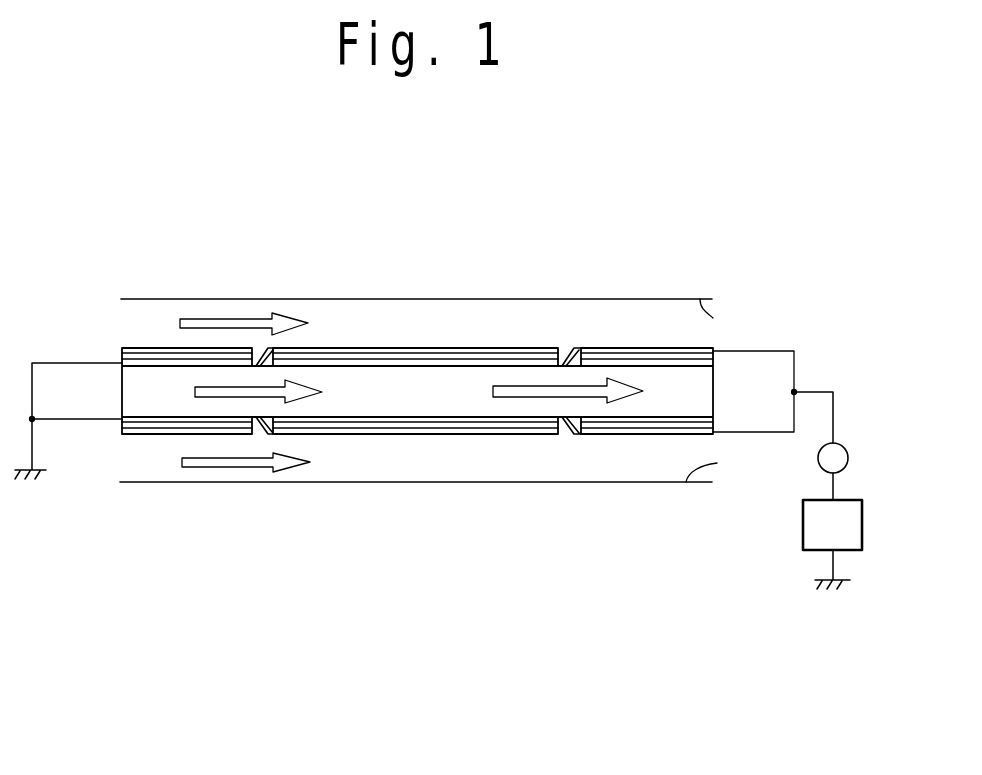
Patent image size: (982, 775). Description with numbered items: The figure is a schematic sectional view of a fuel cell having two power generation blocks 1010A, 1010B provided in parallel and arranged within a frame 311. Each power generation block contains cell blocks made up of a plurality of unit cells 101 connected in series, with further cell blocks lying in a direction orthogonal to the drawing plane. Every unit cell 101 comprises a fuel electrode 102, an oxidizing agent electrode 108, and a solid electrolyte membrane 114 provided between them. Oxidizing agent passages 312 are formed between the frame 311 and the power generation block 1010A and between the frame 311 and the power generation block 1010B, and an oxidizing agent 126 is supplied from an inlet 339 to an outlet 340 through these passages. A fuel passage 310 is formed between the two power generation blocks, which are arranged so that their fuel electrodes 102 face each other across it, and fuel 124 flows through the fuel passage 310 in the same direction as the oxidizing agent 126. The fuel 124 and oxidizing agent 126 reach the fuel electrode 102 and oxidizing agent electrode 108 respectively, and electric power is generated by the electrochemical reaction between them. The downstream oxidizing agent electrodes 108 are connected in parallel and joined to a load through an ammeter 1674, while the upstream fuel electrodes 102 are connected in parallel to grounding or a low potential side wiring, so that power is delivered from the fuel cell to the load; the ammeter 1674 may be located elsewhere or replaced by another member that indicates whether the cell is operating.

The unit cell 101 is at (318, 347).
The fuel electrode 102 is at (545, 352).
The oxidizing agent electrode 108 is at (329, 352).
The solid electrolyte membrane 114 is at (363, 356).
The fuel 124 is at (396, 393).
The oxidizing agent 126 is at (226, 390).
The fuel passage 310 is at (127, 402).
The frame 311 is at (233, 298).
The oxidizing agent passage 312 is at (657, 325).
The inlet 339 is at (131, 312).
The outlet 340 is at (700, 299).
The power generation block 1010A is at (706, 337).
The power generation block 1010B is at (696, 440).
The ammeter 1674 is at (846, 446).